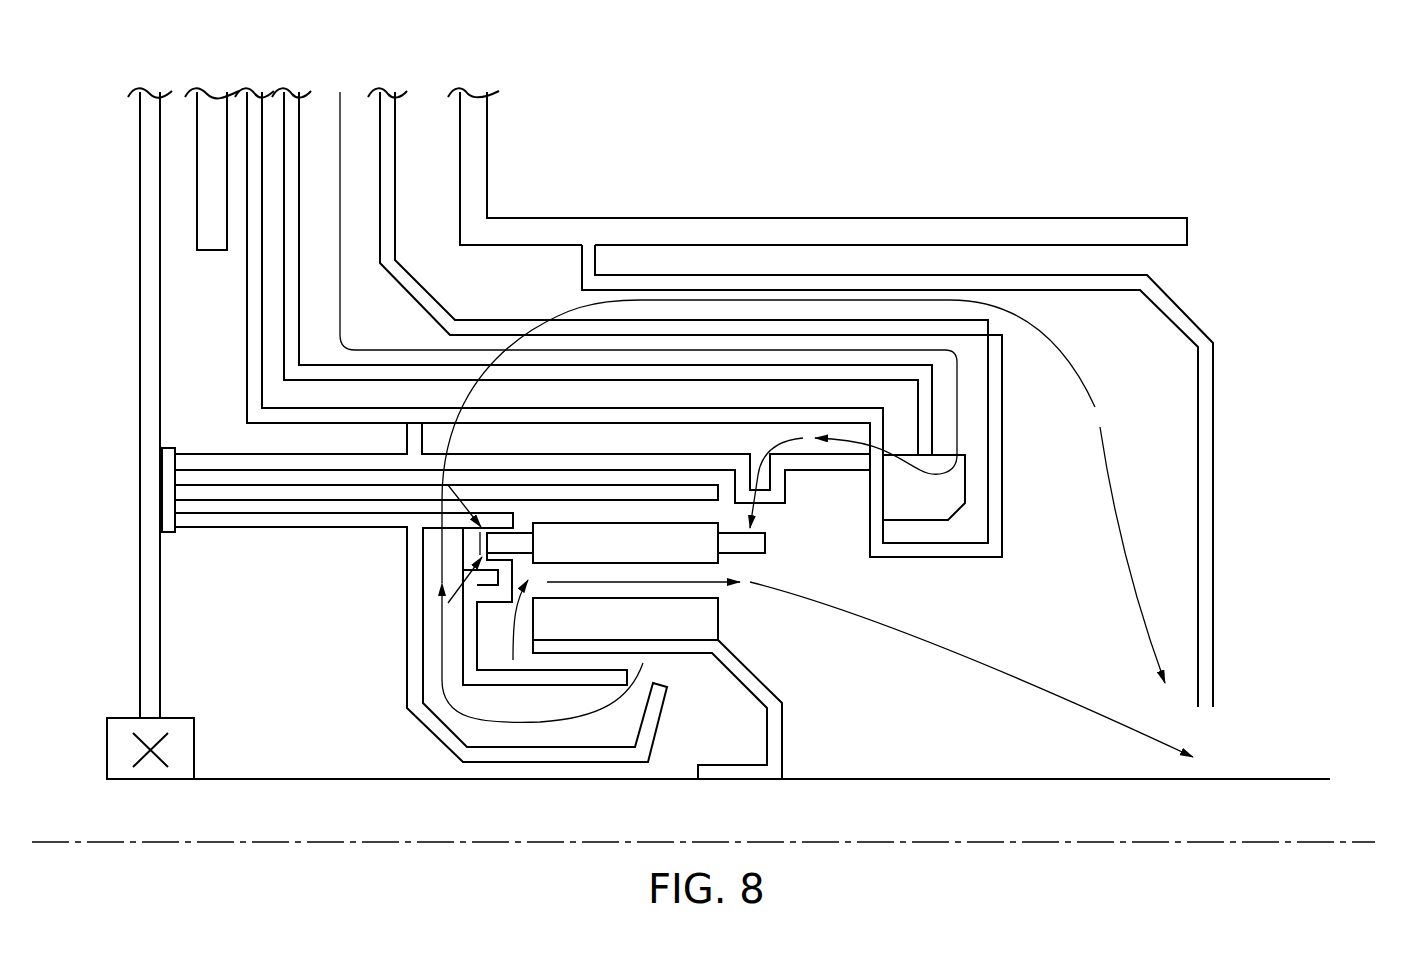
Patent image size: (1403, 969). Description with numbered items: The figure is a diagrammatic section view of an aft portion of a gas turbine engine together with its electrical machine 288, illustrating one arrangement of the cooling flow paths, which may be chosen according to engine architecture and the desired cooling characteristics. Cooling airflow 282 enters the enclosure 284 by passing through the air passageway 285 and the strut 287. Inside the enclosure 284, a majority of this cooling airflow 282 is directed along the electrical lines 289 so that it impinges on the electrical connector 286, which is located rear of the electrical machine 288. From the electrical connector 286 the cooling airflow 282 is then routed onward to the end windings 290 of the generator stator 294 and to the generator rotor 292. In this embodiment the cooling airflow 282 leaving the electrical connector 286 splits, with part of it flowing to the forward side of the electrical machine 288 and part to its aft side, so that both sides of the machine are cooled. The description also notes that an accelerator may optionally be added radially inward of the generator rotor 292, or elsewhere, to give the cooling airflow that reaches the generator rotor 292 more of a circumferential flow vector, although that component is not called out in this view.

The cooling airflow 282 is at (340, 110).
The enclosure 284 is at (1163, 347).
The air passageway 285 is at (395, 175).
The electrical connector 286 is at (923, 513).
The strut 287 is at (487, 175).
The electrical machine 288 is at (447, 592).
The electrical lines 289 is at (283, 313).
The end windings 290 is at (757, 546).
The generator rotor 292 is at (650, 636).
The generator stator 294 is at (650, 559).